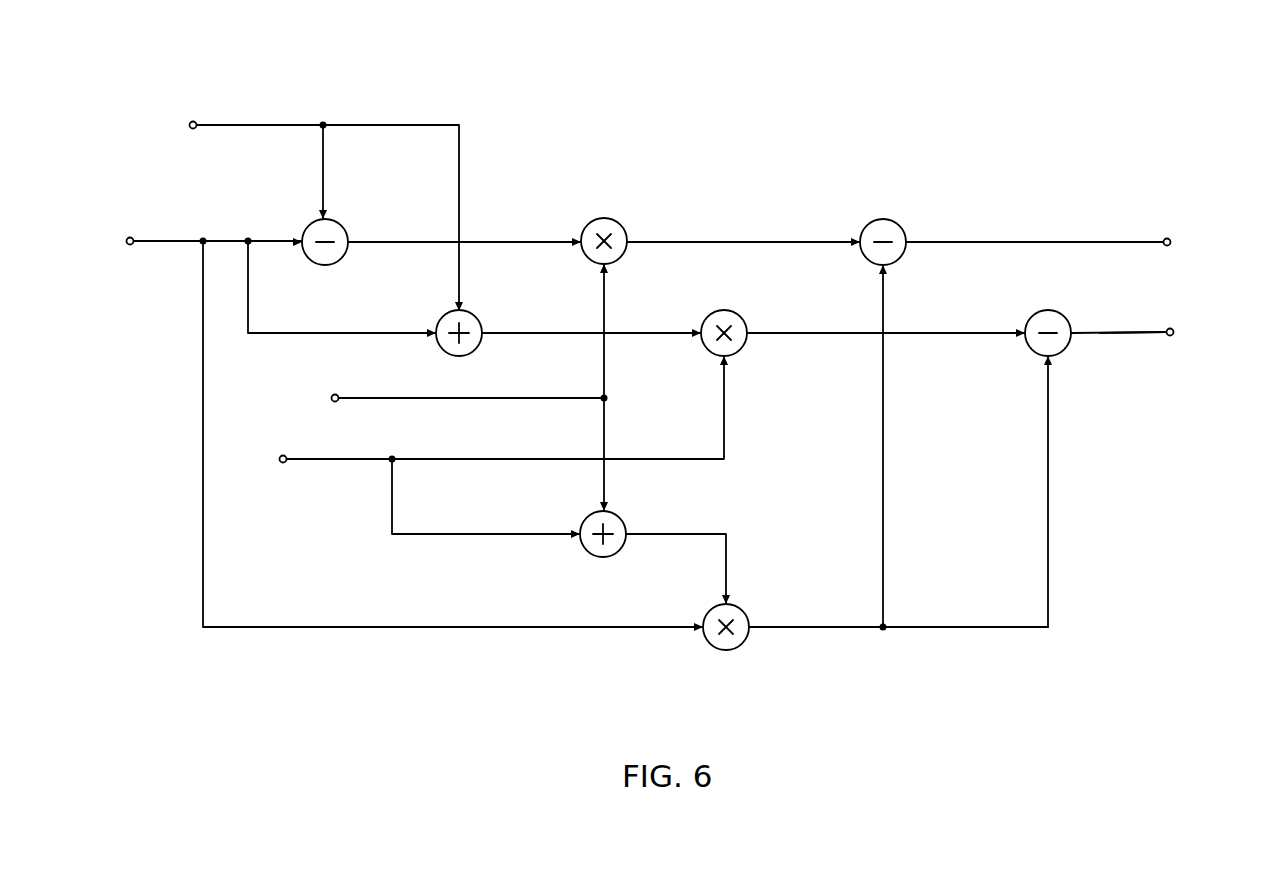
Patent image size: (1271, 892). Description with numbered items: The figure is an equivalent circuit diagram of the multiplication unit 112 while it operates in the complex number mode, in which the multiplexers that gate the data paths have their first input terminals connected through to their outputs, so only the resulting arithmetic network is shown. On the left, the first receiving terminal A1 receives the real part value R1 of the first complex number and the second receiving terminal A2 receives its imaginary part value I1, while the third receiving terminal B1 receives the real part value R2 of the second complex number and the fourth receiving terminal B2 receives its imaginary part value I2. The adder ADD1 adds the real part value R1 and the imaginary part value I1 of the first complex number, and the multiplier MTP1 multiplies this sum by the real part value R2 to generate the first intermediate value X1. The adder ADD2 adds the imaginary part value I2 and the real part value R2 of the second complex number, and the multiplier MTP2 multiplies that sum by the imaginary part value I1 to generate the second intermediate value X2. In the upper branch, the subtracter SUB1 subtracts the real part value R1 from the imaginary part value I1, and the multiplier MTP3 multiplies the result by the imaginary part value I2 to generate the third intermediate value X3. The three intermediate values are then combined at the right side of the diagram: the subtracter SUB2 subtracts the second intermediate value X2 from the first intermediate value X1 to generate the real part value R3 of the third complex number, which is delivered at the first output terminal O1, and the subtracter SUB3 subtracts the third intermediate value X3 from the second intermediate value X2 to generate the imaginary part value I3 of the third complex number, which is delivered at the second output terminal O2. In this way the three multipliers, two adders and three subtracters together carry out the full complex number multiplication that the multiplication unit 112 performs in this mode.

The multiplication unit 112 is at (1101, 163).
The first receiving terminal A1 is at (196, 121).
The second receiving terminal A2 is at (133, 237).
The third receiving terminal B1 is at (286, 463).
The fourth receiving terminal B2 is at (338, 402).
The first output terminal O1 is at (1173, 328).
The second output terminal O2 is at (1170, 238).
The subtracter SUB1 is at (343, 225).
The subtracter SUB2 is at (1063, 311).
The subtracter SUB3 is at (900, 222).
The adder ADD1 is at (476, 317).
The adder ADD2 is at (620, 516).
The multiplier MTP1 is at (741, 311).
The multiplier MTP2 is at (744, 606).
The multiplier MTP3 is at (619, 221).
The real part value R1 is at (207, 144).
The imaginary part value I1 is at (151, 258).
The real part value R2 is at (302, 443).
The imaginary part value I2 is at (359, 383).
The real part value R3 is at (1209, 353).
The imaginary part value I3 is at (1211, 262).
The first intermediate value X1 is at (885, 353).
The second intermediate value X2 is at (898, 646).
The third intermediate value X3 is at (743, 221).